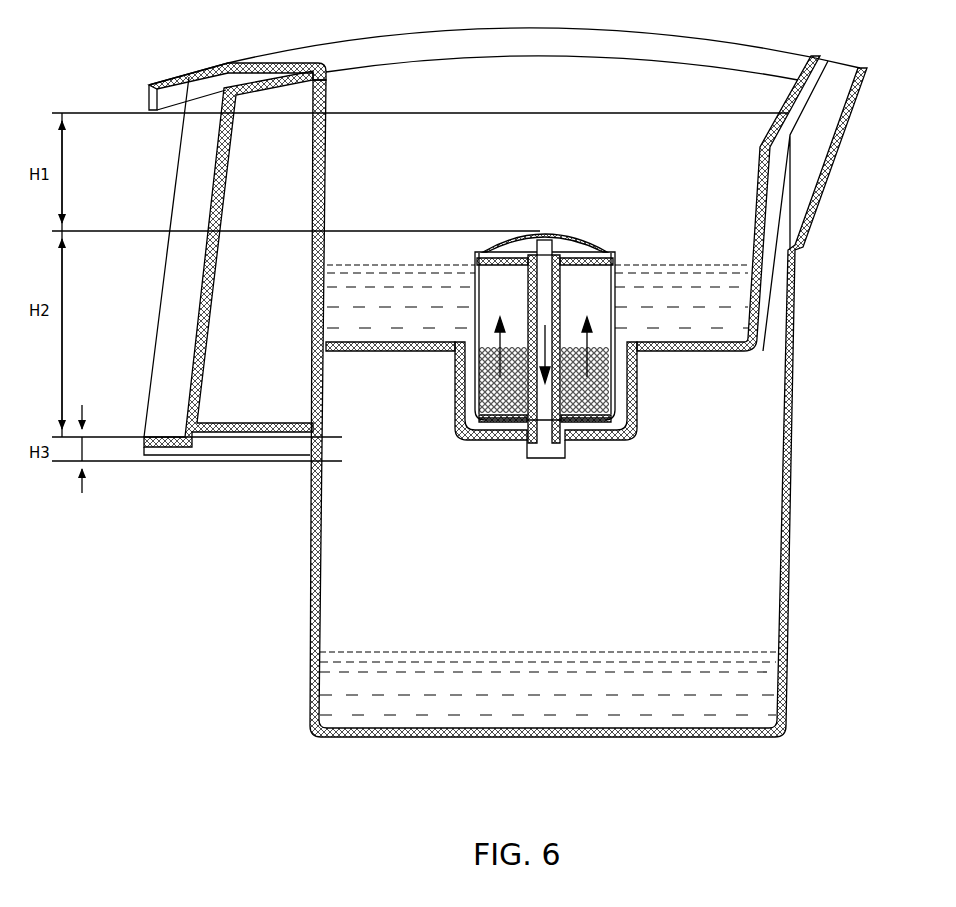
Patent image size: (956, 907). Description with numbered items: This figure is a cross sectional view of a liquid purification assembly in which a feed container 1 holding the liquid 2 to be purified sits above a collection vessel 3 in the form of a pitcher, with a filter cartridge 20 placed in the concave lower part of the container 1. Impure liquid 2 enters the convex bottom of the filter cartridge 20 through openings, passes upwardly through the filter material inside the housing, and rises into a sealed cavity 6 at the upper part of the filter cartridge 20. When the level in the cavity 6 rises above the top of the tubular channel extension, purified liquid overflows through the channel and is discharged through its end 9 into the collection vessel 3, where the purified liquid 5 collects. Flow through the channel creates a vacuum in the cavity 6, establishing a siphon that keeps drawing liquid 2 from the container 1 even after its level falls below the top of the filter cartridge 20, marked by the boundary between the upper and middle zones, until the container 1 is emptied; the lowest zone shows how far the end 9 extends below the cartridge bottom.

The feed container 1 is at (687, 142).
The liquid 2 is at (733, 300).
The collection vessel 3 is at (715, 468).
The filtered water 5 is at (737, 680).
The sealed cavity 6 is at (580, 242).
The end of tubular fluid channel 9 is at (546, 458).
The filter cartridge 20 is at (637, 348).